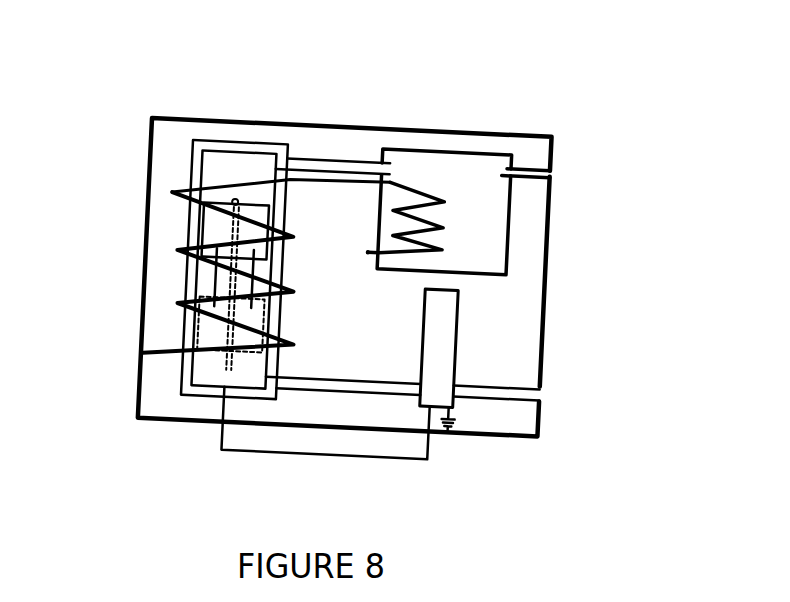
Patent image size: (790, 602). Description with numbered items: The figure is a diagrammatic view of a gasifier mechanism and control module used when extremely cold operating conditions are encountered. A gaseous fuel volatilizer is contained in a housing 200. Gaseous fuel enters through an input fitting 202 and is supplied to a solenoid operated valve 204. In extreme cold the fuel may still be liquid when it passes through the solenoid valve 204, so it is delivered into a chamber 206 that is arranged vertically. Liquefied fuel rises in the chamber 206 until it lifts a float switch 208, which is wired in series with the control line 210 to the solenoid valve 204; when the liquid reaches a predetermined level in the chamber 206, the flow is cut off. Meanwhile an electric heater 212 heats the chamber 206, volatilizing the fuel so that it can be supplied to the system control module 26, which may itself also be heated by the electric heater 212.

The system control module 26 is at (461, 140).
The housing 200 is at (347, 228).
The input fitting 202 is at (553, 408).
The solenoid operated valve 204 is at (401, 357).
The chamber 206 is at (249, 270).
The float switch 208 is at (173, 271).
The control line 210 is at (324, 450).
The electric heater 212 is at (279, 218).